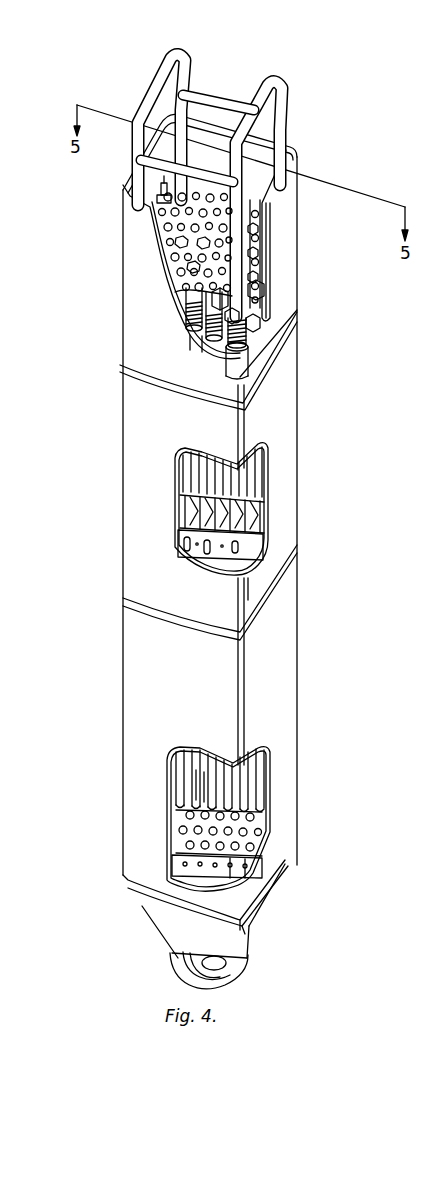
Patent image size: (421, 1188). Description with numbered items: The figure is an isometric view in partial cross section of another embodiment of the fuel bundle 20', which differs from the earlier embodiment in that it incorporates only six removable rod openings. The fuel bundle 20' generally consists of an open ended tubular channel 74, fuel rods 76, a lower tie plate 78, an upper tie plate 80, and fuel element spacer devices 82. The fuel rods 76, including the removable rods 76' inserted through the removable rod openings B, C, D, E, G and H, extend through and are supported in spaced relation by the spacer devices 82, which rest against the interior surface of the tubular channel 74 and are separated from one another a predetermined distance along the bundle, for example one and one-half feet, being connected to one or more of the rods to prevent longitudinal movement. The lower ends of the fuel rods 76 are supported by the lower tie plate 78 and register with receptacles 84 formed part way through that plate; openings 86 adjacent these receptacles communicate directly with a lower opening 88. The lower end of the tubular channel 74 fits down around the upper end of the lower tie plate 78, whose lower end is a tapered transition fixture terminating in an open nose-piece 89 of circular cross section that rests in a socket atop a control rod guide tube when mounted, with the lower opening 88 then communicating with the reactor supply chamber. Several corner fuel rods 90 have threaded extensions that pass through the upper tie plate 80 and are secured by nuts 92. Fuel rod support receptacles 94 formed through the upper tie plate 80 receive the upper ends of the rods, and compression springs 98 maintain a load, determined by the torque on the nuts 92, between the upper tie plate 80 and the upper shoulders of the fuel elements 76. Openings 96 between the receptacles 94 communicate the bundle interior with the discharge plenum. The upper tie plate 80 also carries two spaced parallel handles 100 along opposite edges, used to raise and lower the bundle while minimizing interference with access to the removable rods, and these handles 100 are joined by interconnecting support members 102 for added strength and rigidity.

The fuel bundle 20' is at (210, 499).
The open ended tubular channel 74 is at (247, 520).
The fuel rods 76 is at (213, 550).
The removable rods 76' is at (125, 568).
The lower tie plate 78 is at (176, 913).
The upper tie plate 80 is at (142, 308).
The fuel element spacer devices 82 is at (277, 527).
The receptacles 84 is at (147, 833).
The openings 86 is at (147, 877).
The lower opening 88 is at (262, 954).
The open nose-piece 89 is at (297, 916).
The corner fuel rods 90 is at (284, 356).
The nuts 92 is at (283, 288).
The fuel rod support receptacles 94 is at (133, 254).
The openings 96 is at (137, 278).
The compression springs 98 is at (227, 331).
The handles 100 is at (250, 163).
The interconnecting support members 102 is at (149, 116).
The removable rod opening B is at (99, 189).
The removable rod opening C is at (135, 210).
The removable rod opening D is at (307, 251).
The removable rod opening E is at (304, 269).
The removable rod opening G is at (306, 251).
The removable rod opening H is at (133, 236).